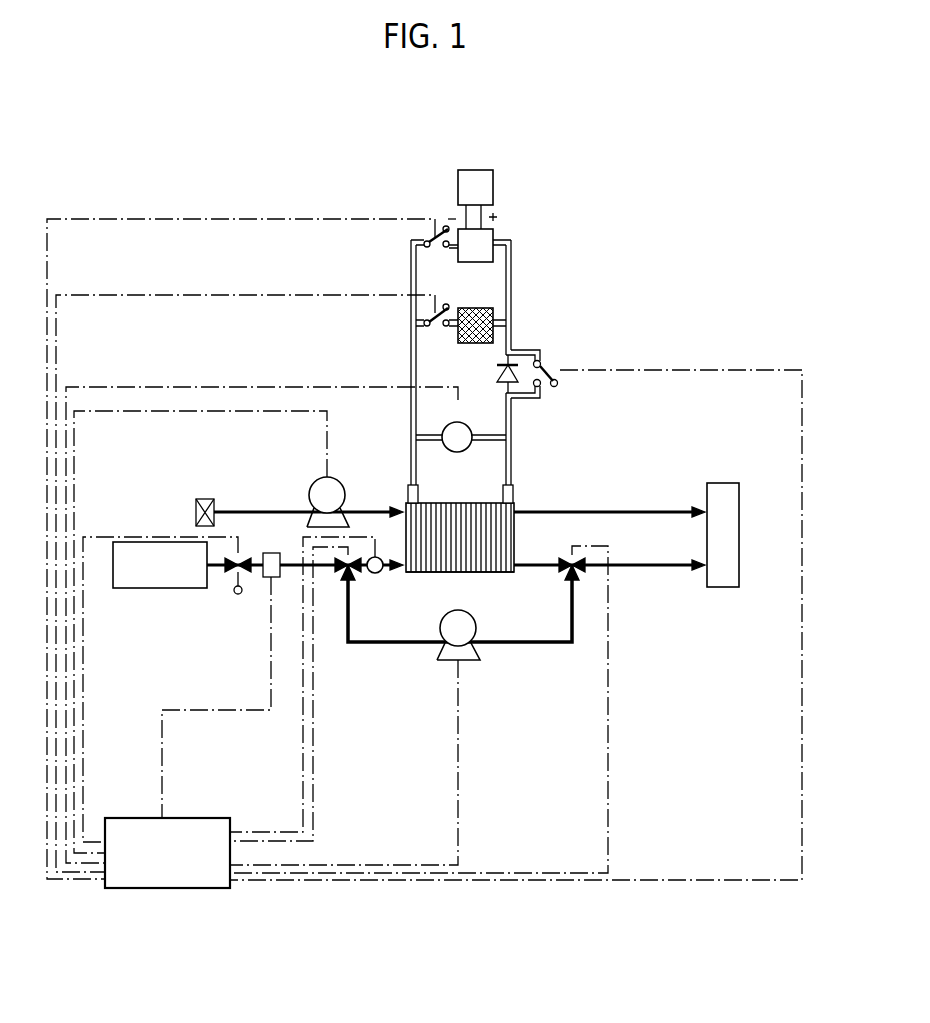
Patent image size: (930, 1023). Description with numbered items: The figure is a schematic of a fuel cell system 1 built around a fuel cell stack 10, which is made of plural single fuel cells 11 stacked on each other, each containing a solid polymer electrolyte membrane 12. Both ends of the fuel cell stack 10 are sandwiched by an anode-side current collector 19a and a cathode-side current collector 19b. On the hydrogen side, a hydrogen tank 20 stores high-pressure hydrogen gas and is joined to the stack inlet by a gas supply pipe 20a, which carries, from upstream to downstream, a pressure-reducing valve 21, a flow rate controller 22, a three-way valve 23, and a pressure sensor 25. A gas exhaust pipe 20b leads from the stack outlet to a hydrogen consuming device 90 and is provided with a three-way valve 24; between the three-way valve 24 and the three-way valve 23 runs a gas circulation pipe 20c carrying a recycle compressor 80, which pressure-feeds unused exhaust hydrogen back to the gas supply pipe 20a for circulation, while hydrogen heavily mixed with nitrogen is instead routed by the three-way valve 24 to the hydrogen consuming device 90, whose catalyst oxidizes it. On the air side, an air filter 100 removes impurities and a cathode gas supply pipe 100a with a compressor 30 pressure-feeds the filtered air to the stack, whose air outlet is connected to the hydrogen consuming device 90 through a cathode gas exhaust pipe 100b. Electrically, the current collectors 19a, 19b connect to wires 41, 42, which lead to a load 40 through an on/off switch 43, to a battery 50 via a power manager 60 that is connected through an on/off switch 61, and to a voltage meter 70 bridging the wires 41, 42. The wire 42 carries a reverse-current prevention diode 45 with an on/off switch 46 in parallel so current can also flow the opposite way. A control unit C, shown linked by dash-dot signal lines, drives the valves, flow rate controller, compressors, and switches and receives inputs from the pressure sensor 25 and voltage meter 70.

The fuel cell system 1 is at (181, 203).
The fuel cell stack 10 is at (513, 574).
The single fuel cell 11 is at (425, 508).
The solid polymer electrolyte membrane 12 is at (418, 574).
The anode-side current collector 19a is at (407, 494).
The cathode-side current collector 19b is at (514, 493).
The hydrogen tank 20 is at (128, 590).
The gas supply pipe 20a is at (290, 563).
The gas exhaust pipe 20b is at (652, 568).
The gas circulation pipe 20c is at (372, 645).
The pressure-reducing valve 21 is at (228, 578).
The flow rate controller 22 is at (282, 578).
The three-way valve 23 is at (340, 578).
The three-way valve 24 is at (580, 577).
The pressure sensor 25 is at (377, 575).
The compressor 30 is at (318, 480).
The load 40 is at (480, 308).
The wire 41 is at (411, 345).
The wire 42 is at (512, 462).
The on/off switch 43 is at (430, 316).
The reverse-current prevention diode 45 is at (513, 380).
The on/off switch 46 is at (545, 366).
The battery 50 is at (494, 183).
The power manager 60 is at (494, 240).
The on/off switch 61 is at (430, 235).
The voltage meter 70 is at (462, 422).
The recycle compressor 80 is at (440, 657).
The hydrogen consuming device 90 is at (740, 505).
The air filter 100 is at (203, 497).
The cathode gas supply pipe 100a is at (258, 510).
The cathode gas exhaust pipe 100b is at (646, 510).
The control unit C is at (100, 895).